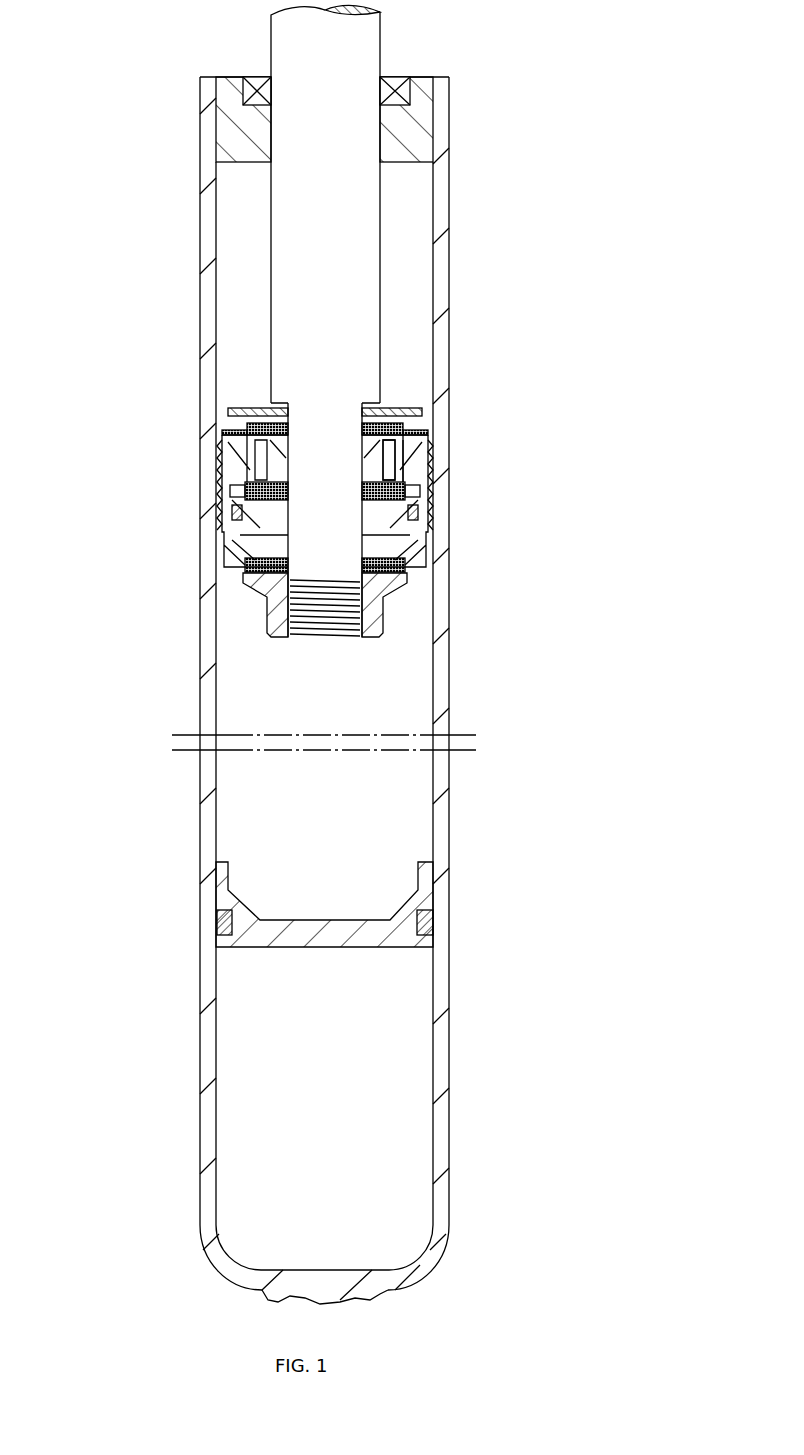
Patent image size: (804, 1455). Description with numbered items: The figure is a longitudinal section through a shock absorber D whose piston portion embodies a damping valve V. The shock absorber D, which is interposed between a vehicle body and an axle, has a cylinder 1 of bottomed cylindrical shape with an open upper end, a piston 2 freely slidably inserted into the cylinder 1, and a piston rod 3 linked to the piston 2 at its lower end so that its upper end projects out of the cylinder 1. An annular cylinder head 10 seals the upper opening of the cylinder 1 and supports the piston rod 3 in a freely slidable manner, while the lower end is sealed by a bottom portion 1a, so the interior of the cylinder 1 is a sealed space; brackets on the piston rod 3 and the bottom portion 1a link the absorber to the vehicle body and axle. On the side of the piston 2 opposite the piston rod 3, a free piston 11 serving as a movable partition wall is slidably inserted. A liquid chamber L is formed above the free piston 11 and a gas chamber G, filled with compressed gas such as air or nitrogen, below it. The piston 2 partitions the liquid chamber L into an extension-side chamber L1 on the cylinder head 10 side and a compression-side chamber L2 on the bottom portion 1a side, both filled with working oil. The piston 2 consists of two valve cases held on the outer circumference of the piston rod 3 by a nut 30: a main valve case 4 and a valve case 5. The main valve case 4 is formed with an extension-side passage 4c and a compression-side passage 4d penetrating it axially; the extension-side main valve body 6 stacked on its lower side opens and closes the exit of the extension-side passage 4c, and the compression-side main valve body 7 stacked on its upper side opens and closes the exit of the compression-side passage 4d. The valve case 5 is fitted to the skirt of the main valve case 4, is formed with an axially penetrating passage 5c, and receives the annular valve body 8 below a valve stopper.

The cylinder 1 is at (452, 806).
The bottom portion 1a is at (400, 1297).
The piston 2 is at (204, 530).
The piston rod 3 is at (373, 33).
The main valve case 4 is at (437, 488).
The extension-side passage 4c is at (220, 462).
The compression-side passage 4d is at (415, 455).
The valve case 5 is at (216, 558).
The passage 5c is at (407, 522).
The extension-side main valve body 6 is at (222, 497).
The compression-side main valve body 7 is at (418, 420).
The valve body 8 is at (390, 573).
The cylinder head 10 is at (428, 131).
The free piston 11 is at (243, 950).
The nut 30 is at (380, 625).
The shock absorber D is at (185, 127).
The damping valve V is at (220, 402).
The liquid chamber L is at (222, 673).
The extension-side chamber L1 is at (253, 290).
The compression-side chamber L2 is at (348, 718).
The gas chamber G is at (338, 1125).